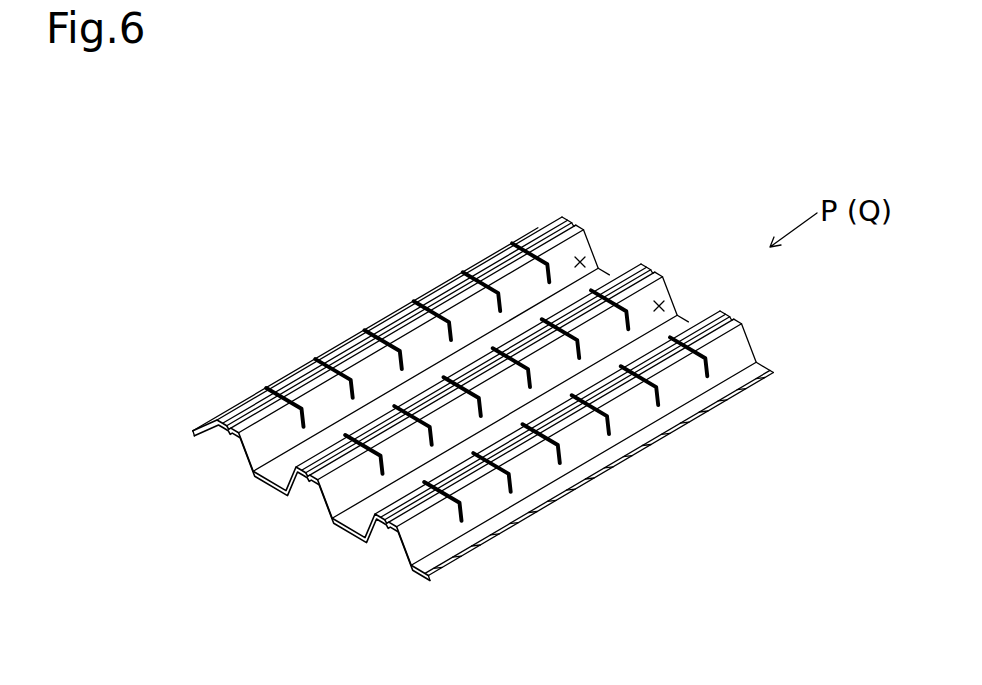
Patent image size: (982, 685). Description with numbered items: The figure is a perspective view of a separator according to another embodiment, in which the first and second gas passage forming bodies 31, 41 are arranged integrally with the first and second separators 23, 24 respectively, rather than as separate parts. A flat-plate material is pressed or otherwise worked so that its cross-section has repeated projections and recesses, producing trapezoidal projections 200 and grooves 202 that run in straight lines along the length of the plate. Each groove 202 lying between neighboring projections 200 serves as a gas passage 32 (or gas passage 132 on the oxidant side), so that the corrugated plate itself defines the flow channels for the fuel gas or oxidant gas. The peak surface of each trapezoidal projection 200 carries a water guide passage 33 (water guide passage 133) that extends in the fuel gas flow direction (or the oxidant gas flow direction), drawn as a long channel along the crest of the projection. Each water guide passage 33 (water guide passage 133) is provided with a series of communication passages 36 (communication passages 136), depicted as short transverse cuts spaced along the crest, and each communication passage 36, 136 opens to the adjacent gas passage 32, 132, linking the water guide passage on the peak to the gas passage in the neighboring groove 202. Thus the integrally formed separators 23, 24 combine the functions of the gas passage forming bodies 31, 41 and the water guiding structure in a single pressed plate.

The first gas passage forming body 31 is at (511, 384).
The second gas passage forming body 41 is at (597, 185).
The gas passage 32 is at (523, 372).
The gas passage 132 is at (590, 259).
The water guide passage 33 is at (478, 412).
The water guide passage 133 is at (452, 298).
The communication passage 36 is at (486, 400).
The communication passage 136 is at (345, 378).
The trapezoidal projection 200 is at (246, 408).
The groove 202 is at (262, 482).
The first separator 23 is at (589, 500).
The second separator 24 is at (418, 576).